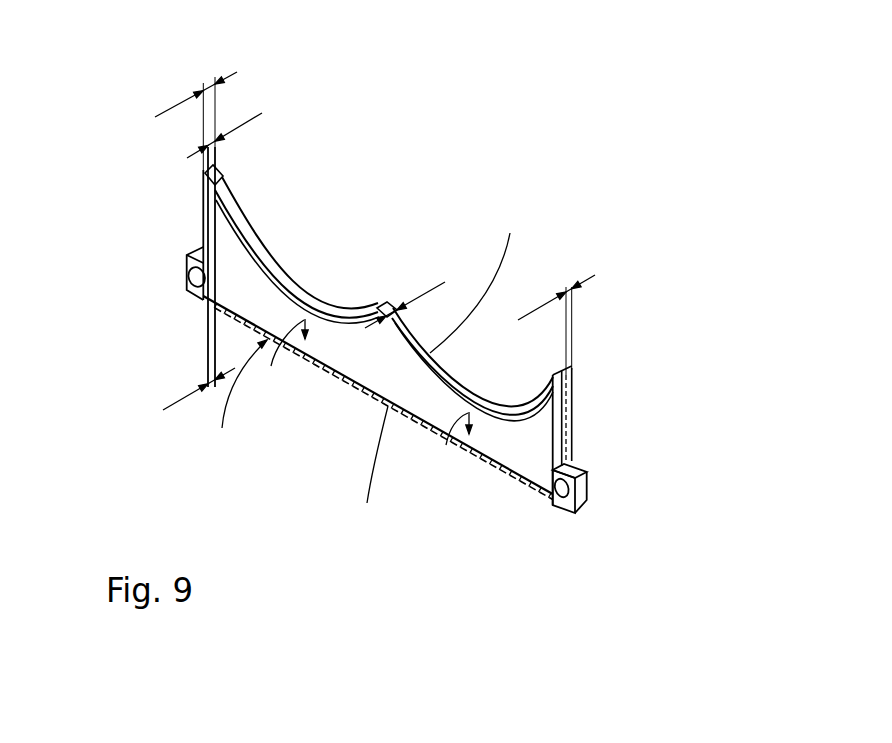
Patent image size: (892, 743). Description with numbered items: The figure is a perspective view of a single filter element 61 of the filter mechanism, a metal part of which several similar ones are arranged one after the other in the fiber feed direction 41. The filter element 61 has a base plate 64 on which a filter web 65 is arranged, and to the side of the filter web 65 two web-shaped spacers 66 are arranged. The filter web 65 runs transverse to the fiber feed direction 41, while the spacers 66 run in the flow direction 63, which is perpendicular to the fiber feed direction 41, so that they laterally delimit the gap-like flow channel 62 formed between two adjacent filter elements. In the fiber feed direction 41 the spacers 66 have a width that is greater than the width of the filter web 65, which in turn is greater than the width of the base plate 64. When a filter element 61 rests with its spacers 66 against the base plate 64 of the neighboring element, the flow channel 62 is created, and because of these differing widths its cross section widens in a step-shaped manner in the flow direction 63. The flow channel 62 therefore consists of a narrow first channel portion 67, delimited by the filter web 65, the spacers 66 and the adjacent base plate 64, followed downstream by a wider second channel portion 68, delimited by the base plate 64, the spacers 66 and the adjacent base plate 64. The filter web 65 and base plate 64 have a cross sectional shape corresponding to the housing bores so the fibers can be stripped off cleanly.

The fiber feed direction 41 is at (105, 192).
The filter element 61 is at (222, 160).
The flow channel 62 is at (430, 405).
The flow direction 63 is at (271, 366).
The base plate 64 is at (518, 462).
The filter web 65 is at (320, 300).
The spacer 66 is at (203, 231).
The first channel portion 67 is at (272, 273).
The second channel portion 68 is at (363, 362).